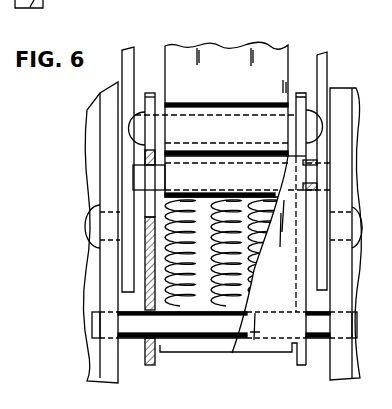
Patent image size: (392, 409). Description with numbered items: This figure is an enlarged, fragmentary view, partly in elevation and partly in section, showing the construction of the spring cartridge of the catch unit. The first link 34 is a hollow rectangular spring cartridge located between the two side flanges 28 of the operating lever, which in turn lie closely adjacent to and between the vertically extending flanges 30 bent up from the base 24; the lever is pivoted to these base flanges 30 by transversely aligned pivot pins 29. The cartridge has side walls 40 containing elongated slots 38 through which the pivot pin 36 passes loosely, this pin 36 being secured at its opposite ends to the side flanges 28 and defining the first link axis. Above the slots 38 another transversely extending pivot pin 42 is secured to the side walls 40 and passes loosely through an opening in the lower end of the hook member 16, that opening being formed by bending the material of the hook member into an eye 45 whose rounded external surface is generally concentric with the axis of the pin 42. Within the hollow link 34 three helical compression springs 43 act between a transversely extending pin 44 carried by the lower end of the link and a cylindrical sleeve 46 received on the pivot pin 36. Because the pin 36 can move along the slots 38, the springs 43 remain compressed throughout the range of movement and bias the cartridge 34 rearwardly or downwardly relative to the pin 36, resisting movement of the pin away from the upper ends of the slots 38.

The hook member 16 is at (209, 45).
The base 24 is at (92, 360).
The side flanges 28 is at (128, 51).
The pivot pins 29 is at (100, 232).
The base flanges 30 is at (107, 107).
The first link 34 is at (282, 302).
The pivot pin 36 is at (138, 180).
The elongated slots 38 is at (148, 199).
The side walls 40 is at (150, 92).
The pivot pin 42 is at (160, 130).
The helical compression springs 43 is at (253, 227).
The pin 44 is at (135, 338).
The eye 45 is at (220, 112).
The cylindrical sleeve 46 is at (237, 189).